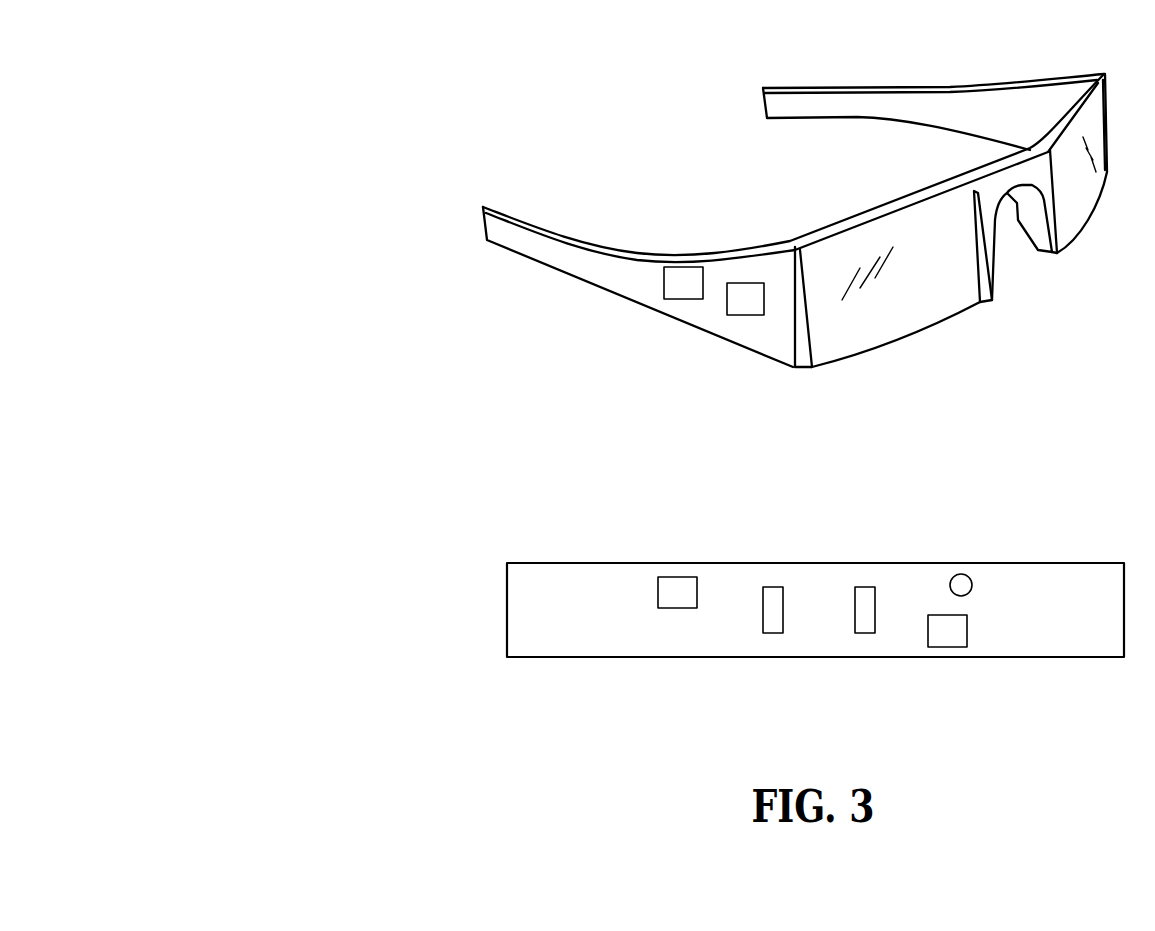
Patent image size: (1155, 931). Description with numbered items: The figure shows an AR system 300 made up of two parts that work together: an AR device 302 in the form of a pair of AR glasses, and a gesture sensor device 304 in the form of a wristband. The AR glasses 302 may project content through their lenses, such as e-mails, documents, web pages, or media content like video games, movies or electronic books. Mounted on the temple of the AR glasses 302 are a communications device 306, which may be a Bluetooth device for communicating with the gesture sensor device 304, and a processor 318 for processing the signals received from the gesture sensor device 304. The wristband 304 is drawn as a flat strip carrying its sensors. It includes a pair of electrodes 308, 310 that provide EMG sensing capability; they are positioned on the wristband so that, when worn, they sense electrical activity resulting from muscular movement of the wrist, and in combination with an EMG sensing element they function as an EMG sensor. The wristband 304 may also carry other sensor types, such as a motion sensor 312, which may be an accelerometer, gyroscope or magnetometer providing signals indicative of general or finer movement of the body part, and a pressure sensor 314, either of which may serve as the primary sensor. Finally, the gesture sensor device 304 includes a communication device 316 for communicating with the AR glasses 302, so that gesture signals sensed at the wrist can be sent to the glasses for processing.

The AR system 300 is at (240, 74).
The AR device 302 is at (627, 83).
The gesture sensor device 304 is at (472, 504).
The communications device 306 is at (746, 283).
The electrode 308 is at (777, 587).
The electrode 310 is at (869, 587).
The motion sensor 312 is at (962, 574).
The pressure sensor 314 is at (683, 577).
The communication device 316 is at (948, 647).
The processor 318 is at (683, 267).